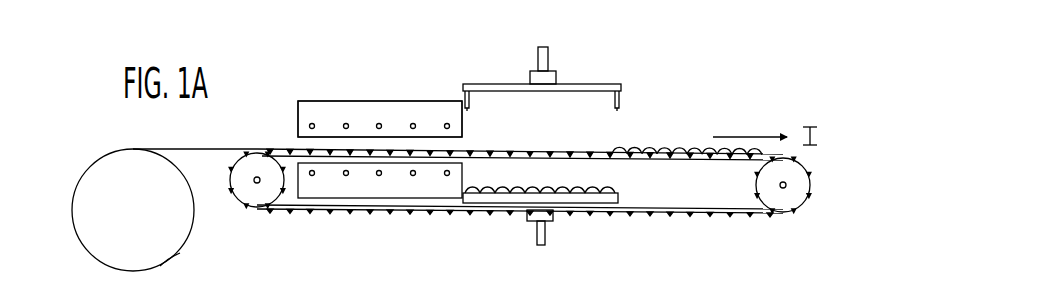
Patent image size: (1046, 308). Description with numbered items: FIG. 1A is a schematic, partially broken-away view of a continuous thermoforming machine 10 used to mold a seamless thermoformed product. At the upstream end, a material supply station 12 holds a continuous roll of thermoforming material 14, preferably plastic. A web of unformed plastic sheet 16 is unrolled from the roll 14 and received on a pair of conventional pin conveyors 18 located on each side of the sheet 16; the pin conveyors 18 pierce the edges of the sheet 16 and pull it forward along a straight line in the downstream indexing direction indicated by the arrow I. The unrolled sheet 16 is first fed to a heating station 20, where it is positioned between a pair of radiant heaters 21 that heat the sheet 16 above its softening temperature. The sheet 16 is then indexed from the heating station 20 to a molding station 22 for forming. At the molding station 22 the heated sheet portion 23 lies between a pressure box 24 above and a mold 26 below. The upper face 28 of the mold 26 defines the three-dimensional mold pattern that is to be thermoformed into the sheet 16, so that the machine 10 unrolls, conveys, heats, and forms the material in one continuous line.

The continuous thermoforming machine 10 is at (759, 72).
The material supply station 12 is at (95, 150).
The roll of thermoforming material 14 is at (167, 262).
The web of unformed plastic sheet 16 is at (207, 150).
The pin conveyors 18 is at (337, 209).
The heating station 20 is at (397, 98).
The radiant heaters 21 is at (336, 100).
The molding station 22 is at (481, 84).
The heated sheet portion 23 is at (577, 150).
The pressure box 24 is at (592, 85).
The mold 26 is at (620, 200).
The upper face of the mold 28 is at (616, 188).